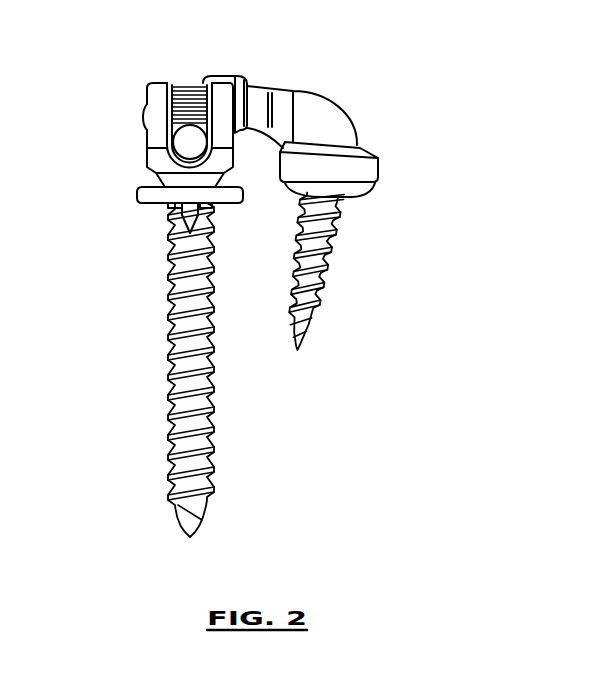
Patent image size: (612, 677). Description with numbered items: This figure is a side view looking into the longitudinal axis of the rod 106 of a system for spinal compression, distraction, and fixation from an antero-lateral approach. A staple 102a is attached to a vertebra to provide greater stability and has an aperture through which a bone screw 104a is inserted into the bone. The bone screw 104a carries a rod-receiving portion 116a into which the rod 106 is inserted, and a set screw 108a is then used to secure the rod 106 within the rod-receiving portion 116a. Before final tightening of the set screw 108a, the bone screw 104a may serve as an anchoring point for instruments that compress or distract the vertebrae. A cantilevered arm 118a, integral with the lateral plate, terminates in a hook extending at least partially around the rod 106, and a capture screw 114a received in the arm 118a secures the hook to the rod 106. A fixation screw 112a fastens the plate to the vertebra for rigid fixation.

The staple 102a is at (153, 198).
The bone screw 104a is at (176, 345).
The rod 106 is at (188, 147).
The set screw 108a is at (166, 88).
The fixation screw 112a is at (330, 258).
The capture screw 114a is at (208, 78).
The rod-receiving portion 116a is at (155, 132).
The cantilevered arm 118a is at (320, 115).